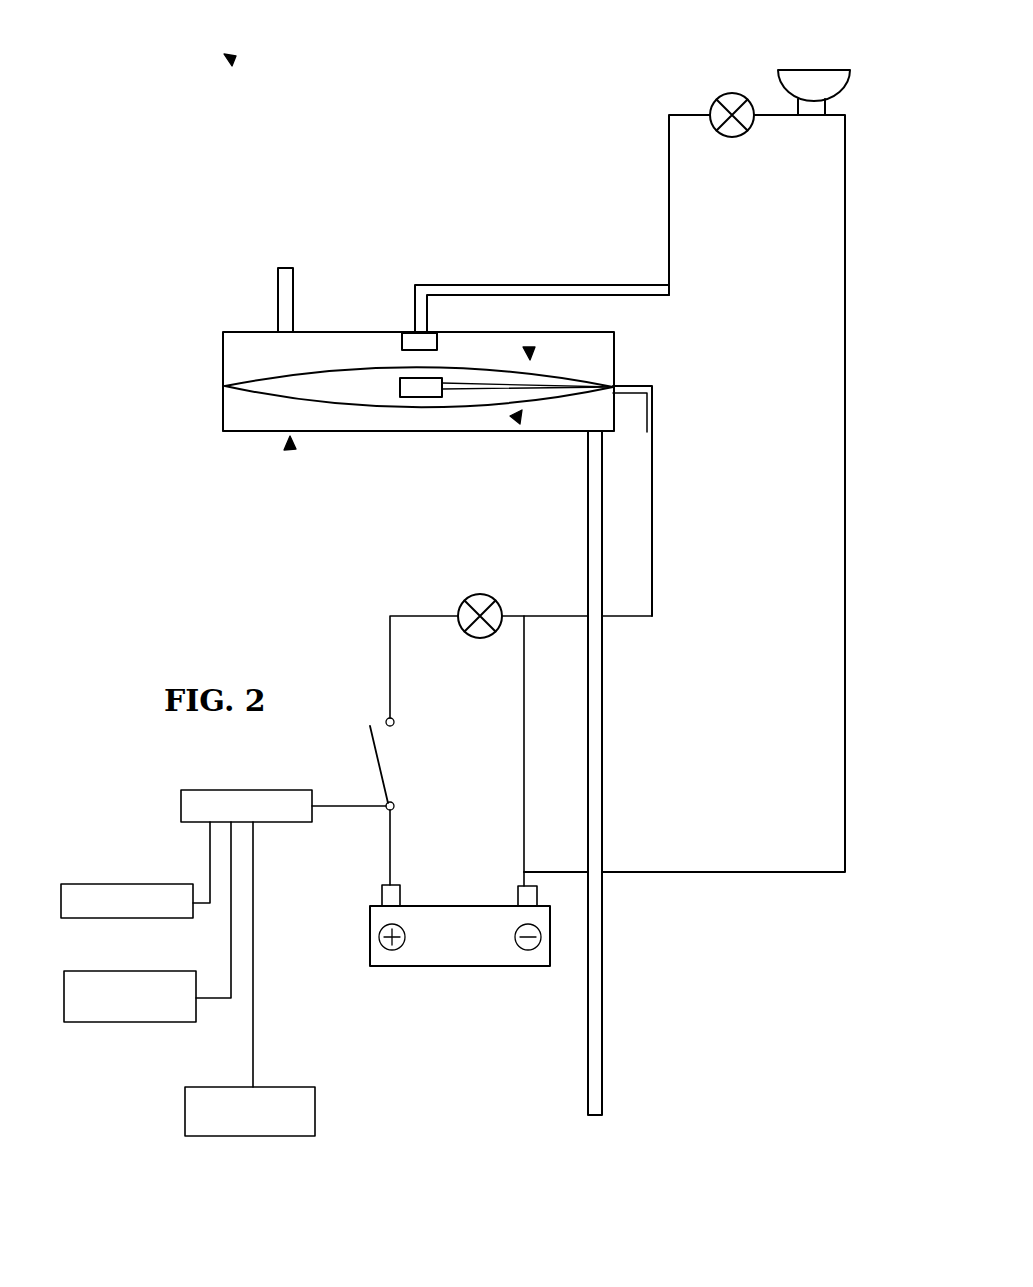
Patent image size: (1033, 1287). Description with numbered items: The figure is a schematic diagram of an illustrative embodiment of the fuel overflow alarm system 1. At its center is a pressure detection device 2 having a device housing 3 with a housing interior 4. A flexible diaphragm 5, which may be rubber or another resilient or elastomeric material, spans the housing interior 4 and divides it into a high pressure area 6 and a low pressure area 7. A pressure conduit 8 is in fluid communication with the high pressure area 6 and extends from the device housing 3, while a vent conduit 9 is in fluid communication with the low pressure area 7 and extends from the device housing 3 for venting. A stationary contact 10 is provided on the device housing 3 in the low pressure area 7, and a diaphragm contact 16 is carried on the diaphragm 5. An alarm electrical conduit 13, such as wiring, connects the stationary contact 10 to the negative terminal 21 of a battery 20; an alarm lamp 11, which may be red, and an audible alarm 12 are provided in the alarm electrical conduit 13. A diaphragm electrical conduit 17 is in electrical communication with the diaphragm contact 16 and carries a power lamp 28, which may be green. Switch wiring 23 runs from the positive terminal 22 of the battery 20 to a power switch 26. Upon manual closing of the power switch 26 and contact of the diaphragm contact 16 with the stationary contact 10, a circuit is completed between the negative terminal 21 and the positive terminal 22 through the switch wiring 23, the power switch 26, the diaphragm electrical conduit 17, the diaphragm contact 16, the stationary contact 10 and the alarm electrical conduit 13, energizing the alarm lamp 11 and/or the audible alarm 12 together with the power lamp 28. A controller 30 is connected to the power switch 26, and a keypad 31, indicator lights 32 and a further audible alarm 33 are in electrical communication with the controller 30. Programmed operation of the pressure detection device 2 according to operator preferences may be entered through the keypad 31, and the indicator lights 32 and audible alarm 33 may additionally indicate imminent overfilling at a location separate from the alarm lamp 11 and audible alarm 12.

The fuel overflow alarm system 1 is at (230, 58).
The pressure detection device 2 is at (290, 448).
The device housing 3 is at (232, 332).
The housing interior 4 is at (356, 333).
The flexible diaphragm 5 is at (357, 394).
The high pressure area 6 is at (518, 418).
The low pressure area 7 is at (529, 348).
The pressure conduit 8 is at (588, 504).
The vent conduit 9 is at (277, 276).
The stationary contact 10 is at (442, 336).
The alarm lamp 11 is at (736, 93).
The audible alarm 12 is at (826, 70).
The alarm electrical conduit 13 is at (670, 236).
The diaphragm contact 16 is at (412, 386).
The diaphragm electrical conduit 17 is at (652, 490).
The battery 20 is at (485, 950).
The negative terminal 21 is at (528, 886).
The positive terminal 22 is at (397, 896).
The switch wiring 23 is at (392, 838).
The power switch 26 is at (383, 771).
The power lamp 28 is at (484, 594).
The controller 30 is at (283, 789).
The keypad 31 is at (110, 884).
The indicator lights 32 is at (140, 971).
The audible alarm 33 is at (300, 1087).